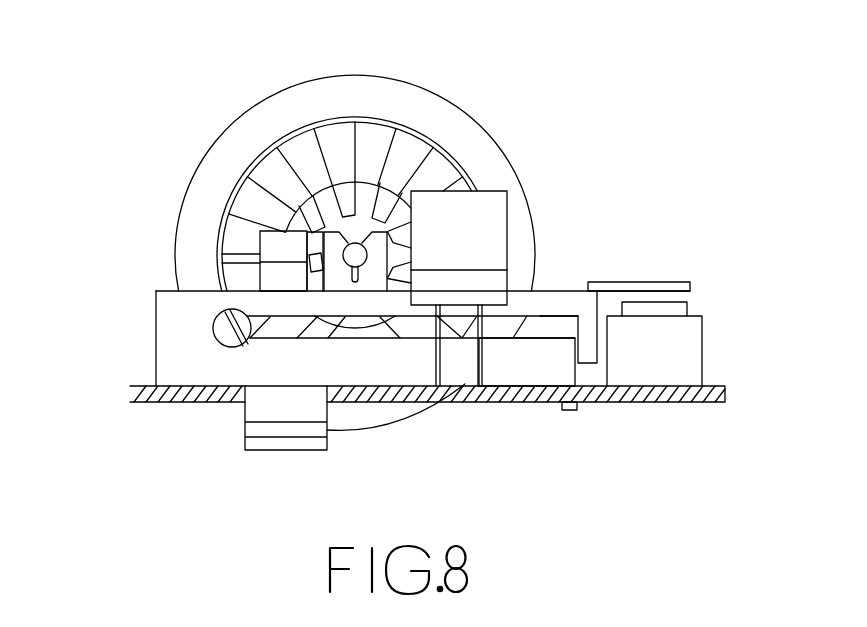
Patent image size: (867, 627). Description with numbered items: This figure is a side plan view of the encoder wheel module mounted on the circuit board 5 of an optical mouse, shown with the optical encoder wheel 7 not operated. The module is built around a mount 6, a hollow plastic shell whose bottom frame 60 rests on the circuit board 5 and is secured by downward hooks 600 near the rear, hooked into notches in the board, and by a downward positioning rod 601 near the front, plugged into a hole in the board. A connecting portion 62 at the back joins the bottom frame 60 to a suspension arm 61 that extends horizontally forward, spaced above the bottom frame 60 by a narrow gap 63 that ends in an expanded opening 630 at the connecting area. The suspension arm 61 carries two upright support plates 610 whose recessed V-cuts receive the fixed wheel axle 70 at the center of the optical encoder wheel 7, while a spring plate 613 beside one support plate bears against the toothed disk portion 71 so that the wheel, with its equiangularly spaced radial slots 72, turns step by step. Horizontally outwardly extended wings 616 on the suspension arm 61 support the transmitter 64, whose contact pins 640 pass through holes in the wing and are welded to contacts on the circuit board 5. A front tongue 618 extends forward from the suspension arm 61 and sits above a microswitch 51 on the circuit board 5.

The circuit board 5 is at (700, 402).
The mount 6 is at (104, 400).
The optical encoder wheel 7 is at (383, 97).
The microswitch 51 is at (677, 307).
The bottom frame 60 is at (527, 365).
The suspension arm 61 is at (563, 302).
The connecting portion 62 is at (168, 340).
The gap 63 is at (555, 330).
The transmitter 64 is at (490, 212).
The fixed wheel axle 70 is at (350, 260).
The toothed disk portion 71 is at (305, 222).
The radial slots 72 is at (300, 155).
The downward hooks 600 is at (285, 430).
The downward positioning rod 601 is at (565, 410).
The upright support plates 610 is at (378, 243).
The spring plate 613 is at (277, 248).
The wings 616 is at (495, 302).
The front tongue 618 is at (678, 282).
The expanded opening 630 is at (222, 327).
The contact pins 640 is at (437, 373).